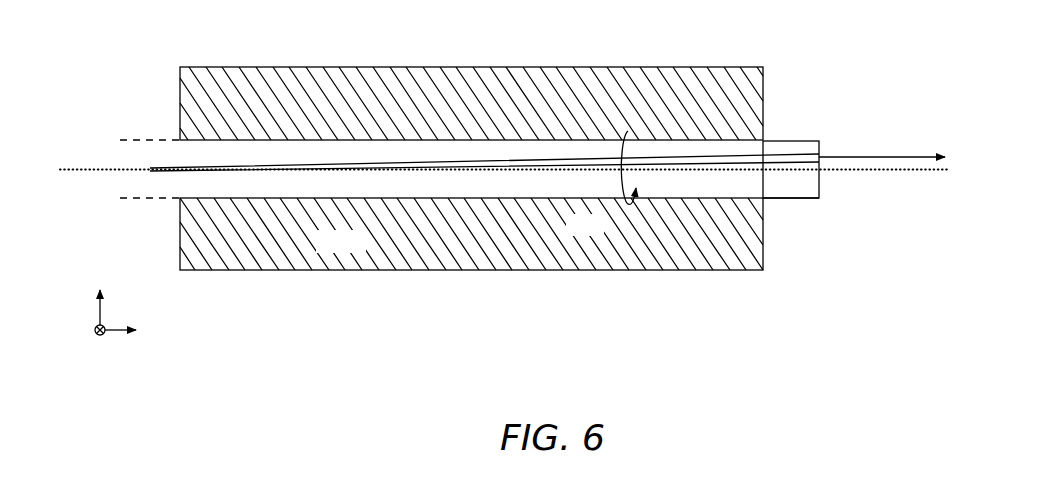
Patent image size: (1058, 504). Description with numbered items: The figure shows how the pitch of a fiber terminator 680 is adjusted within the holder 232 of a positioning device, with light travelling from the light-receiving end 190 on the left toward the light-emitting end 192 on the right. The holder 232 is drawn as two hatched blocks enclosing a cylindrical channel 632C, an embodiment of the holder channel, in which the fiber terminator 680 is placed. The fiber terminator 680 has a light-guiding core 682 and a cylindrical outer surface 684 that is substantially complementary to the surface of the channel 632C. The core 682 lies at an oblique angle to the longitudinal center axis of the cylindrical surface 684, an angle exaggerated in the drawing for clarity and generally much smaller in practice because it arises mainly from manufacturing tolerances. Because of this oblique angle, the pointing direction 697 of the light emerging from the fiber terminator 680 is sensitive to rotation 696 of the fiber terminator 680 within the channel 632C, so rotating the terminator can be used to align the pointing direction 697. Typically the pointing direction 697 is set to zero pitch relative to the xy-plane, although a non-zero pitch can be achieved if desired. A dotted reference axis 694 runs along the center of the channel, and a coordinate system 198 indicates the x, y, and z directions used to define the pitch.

The light-receiving end 190 is at (158, 99).
The holder 232 is at (300, 67).
The light-emitting end 192 is at (776, 98).
The cylindrical channel 632C is at (397, 198).
The light-guiding core 682 is at (783, 156).
The cylindrical outer surface 684 is at (796, 201).
The optical axis 694 is at (85, 168).
The fiber terminator 680 is at (173, 190).
The pointing direction 697 is at (884, 156).
The rotation 696 is at (622, 175).
The coordinate system 198 is at (101, 346).